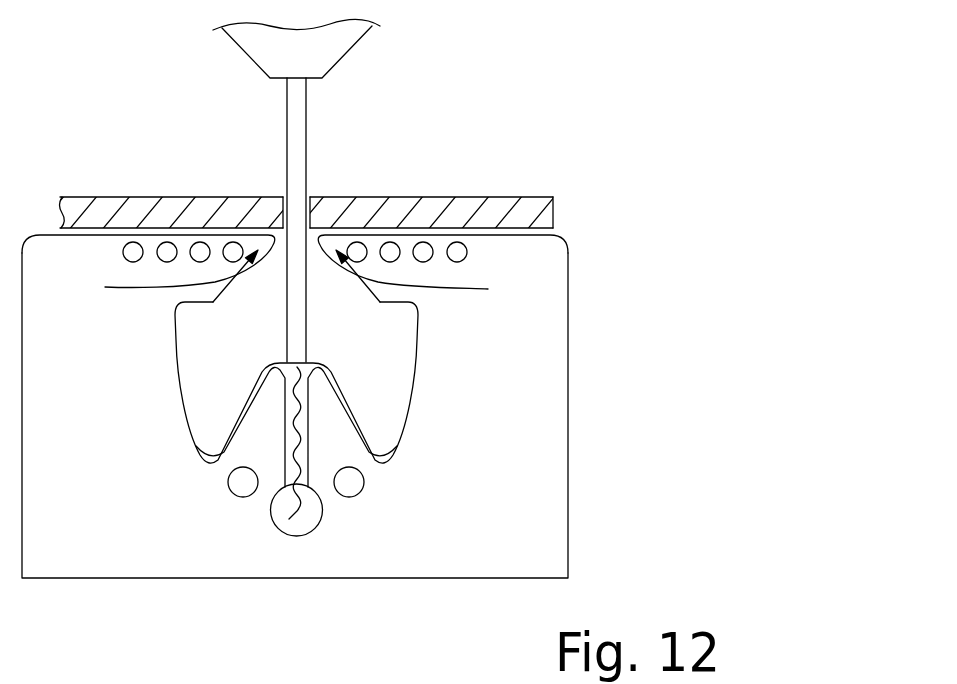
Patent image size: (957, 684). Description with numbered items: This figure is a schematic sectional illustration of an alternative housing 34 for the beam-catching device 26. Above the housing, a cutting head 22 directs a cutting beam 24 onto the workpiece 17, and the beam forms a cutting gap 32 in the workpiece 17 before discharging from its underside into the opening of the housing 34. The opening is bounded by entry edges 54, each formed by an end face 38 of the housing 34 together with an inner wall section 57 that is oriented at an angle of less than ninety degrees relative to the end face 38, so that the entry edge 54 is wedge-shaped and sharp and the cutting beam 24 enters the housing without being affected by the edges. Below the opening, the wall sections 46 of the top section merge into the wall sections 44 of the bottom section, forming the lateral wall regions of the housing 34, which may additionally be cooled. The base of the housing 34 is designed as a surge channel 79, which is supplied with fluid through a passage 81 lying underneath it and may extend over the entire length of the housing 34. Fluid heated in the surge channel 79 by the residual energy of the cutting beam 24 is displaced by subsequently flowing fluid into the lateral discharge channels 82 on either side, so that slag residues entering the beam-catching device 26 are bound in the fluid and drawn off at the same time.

The cutting head 22 is at (335, 40).
The cutting beam 24 is at (337, 98).
The workpiece 17 is at (133, 210).
The cutting gap 32 is at (266, 181).
The end face 38 is at (553, 221).
The housing 34 is at (606, 360).
The beam-catching device 26 is at (386, 415).
The entry edge 54 is at (295, 272).
The inner wall section 57 is at (255, 289).
The wall section of top section 46 is at (438, 337).
The wall section of bottom section 44 is at (420, 422).
The passage 81 is at (278, 514).
The surge channel 79 is at (323, 428).
The lateral discharge channel 82 is at (208, 490).